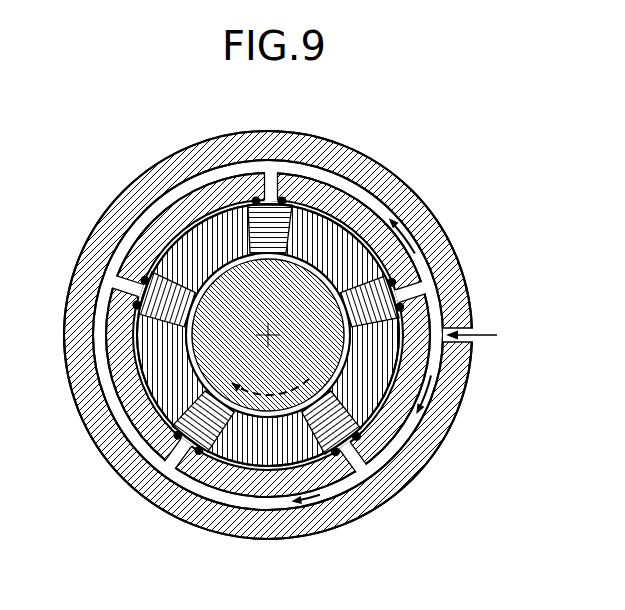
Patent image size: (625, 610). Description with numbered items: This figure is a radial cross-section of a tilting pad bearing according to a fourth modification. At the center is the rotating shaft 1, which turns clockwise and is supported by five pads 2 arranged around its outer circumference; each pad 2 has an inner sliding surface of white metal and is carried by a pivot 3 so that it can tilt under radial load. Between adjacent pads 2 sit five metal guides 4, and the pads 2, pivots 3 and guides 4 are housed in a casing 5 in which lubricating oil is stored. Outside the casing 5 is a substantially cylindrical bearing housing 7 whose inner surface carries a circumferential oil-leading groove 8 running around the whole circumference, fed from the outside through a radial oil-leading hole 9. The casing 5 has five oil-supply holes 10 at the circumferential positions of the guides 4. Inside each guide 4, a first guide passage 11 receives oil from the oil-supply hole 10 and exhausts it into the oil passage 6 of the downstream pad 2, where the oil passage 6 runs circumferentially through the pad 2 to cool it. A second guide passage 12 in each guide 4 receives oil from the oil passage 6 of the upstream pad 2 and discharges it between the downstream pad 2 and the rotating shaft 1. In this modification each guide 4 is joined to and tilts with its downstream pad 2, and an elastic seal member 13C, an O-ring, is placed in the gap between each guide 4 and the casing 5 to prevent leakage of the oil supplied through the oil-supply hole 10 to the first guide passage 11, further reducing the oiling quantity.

The rotating shaft 1 is at (285, 283).
The pad 2 is at (222, 217).
The pivot 3 is at (188, 222).
The guide 4 is at (141, 272).
The casing 5 is at (343, 225).
The oil passage 6 is at (235, 493).
The bearing housing 7 is at (427, 203).
The circumferential oil-leading groove 8 is at (428, 272).
The radial oil-leading hole 9 is at (468, 343).
The oil-supply hole 10 is at (363, 463).
The first guide passage 11 is at (345, 486).
The second guide passage 12 is at (412, 470).
The elastic seal member 13C is at (392, 442).